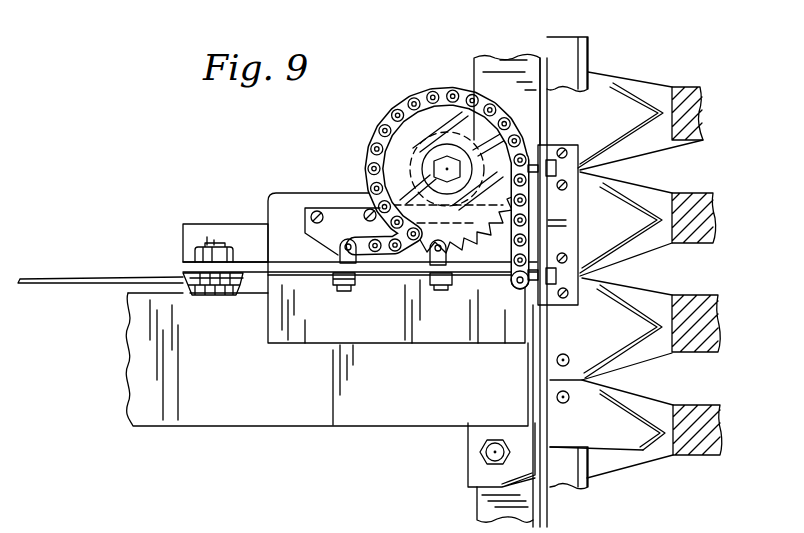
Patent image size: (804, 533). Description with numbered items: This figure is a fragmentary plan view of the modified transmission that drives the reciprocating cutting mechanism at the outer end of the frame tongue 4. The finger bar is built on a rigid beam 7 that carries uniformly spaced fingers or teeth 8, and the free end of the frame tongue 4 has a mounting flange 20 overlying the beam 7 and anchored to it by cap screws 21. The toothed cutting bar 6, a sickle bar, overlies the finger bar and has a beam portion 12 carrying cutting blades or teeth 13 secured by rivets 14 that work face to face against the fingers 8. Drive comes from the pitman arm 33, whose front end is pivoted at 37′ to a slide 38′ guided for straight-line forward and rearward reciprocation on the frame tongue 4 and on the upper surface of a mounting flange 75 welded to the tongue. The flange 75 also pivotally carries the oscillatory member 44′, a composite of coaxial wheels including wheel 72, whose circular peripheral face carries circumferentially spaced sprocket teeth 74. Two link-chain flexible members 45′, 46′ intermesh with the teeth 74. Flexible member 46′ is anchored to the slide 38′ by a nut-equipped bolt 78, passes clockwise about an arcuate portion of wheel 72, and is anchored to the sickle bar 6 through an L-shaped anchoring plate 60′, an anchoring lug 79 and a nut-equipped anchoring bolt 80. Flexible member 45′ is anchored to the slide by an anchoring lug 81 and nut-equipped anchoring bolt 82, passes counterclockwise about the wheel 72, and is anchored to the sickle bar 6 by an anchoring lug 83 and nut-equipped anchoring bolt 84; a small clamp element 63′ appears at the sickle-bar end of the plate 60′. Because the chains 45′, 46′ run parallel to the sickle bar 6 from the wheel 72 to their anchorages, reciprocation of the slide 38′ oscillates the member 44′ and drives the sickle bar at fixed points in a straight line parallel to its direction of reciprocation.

The frame tongue 4 is at (235, 410).
The toothed cutting bar 6 is at (596, 186).
The rigid beam 7 is at (503, 73).
The fingers or teeth 8 is at (686, 118).
The beam portion 12 is at (568, 60).
The cutting blades or teeth 13 is at (595, 102).
The rivets 14 is at (564, 402).
The mounting flange 20 is at (478, 472).
The cap screws 21 is at (485, 451).
The pitman arm 33 is at (118, 280).
The pivot 37′ is at (210, 250).
The slide 38′ is at (251, 236).
The oscillatory member 44′ is at (400, 150).
The flexible member 45′ is at (375, 252).
The flexible member 46′ is at (430, 93).
The L-shaped anchoring plate 60′ is at (560, 222).
The clamp 63′ is at (540, 205).
The wheel 72 is at (388, 163).
The sprocket teeth 74 is at (505, 240).
The mounting flange 75 is at (295, 197).
The nut-equipped bolt 78 is at (437, 255).
The anchoring lug 79 is at (515, 290).
The nut-equipped anchoring bolt 80 is at (582, 273).
The anchoring lug 81 is at (340, 256).
The nut-equipped anchoring bolt 82 is at (338, 279).
The anchoring lug 83 is at (536, 160).
The nut-equipped anchoring bolt 84 is at (551, 150).